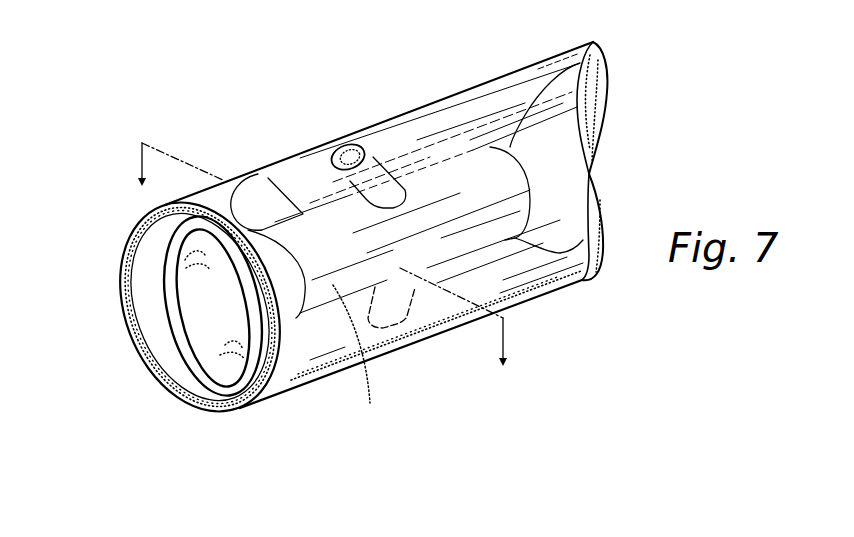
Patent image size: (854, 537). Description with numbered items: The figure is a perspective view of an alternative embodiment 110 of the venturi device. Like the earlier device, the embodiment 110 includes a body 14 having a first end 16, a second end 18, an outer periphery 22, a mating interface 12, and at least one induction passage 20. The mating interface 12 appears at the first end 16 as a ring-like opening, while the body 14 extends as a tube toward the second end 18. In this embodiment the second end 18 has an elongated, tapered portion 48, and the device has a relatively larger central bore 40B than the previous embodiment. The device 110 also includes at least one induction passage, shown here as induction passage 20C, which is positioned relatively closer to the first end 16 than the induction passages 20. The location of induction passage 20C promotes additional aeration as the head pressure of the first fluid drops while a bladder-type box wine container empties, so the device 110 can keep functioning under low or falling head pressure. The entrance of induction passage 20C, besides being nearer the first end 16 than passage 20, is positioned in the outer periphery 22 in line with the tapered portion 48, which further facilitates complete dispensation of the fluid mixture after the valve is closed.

The alternative embodiment of the venturi device 110 is at (364, 224).
The mating interface 12 is at (182, 368).
The body 14 is at (300, 167).
The first end 16 is at (122, 272).
The second end 18 is at (598, 192).
The induction passage 20 is at (347, 150).
The induction passage 20C is at (257, 193).
The outer periphery 22 is at (410, 108).
The central bore 40B is at (360, 357).
The tapered portion 48 is at (605, 66).